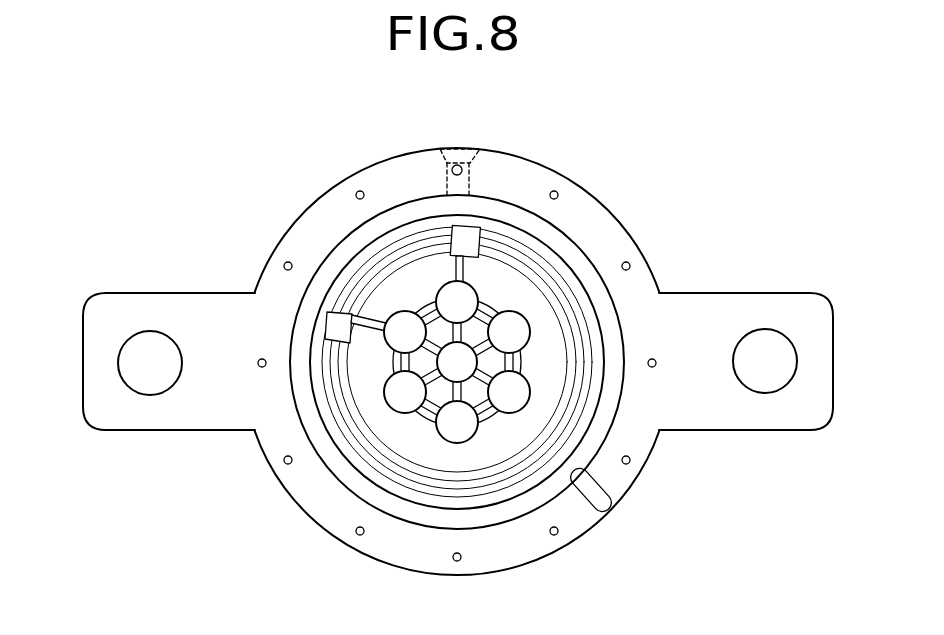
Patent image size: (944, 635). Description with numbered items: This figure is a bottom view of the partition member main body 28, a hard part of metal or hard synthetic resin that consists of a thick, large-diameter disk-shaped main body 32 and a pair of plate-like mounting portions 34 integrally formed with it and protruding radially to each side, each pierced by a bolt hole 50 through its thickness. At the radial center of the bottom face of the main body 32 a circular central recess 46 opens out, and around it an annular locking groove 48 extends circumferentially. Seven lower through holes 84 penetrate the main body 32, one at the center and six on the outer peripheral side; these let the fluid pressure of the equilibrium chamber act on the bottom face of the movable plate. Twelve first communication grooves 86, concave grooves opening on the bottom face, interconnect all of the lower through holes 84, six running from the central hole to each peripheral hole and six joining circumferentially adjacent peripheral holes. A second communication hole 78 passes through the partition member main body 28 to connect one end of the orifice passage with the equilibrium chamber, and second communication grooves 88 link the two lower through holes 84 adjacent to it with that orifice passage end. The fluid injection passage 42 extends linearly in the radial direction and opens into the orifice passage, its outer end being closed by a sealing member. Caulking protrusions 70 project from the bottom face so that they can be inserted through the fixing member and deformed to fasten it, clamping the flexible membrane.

The partition member main body 28 is at (641, 160).
The main body 32 is at (603, 487).
The mounting portion 34 is at (134, 312).
The fluid injection passage 42 is at (456, 148).
The central recess 46 is at (418, 471).
The locking groove 48 is at (572, 485).
The bolt hole 50 is at (136, 383).
The caulking protrusion 70 is at (359, 190).
The second communication hole 78 is at (396, 243).
The lower through hole 84 is at (470, 287).
The first communication groove 86 is at (388, 386).
The second communication groove 88 is at (455, 257).